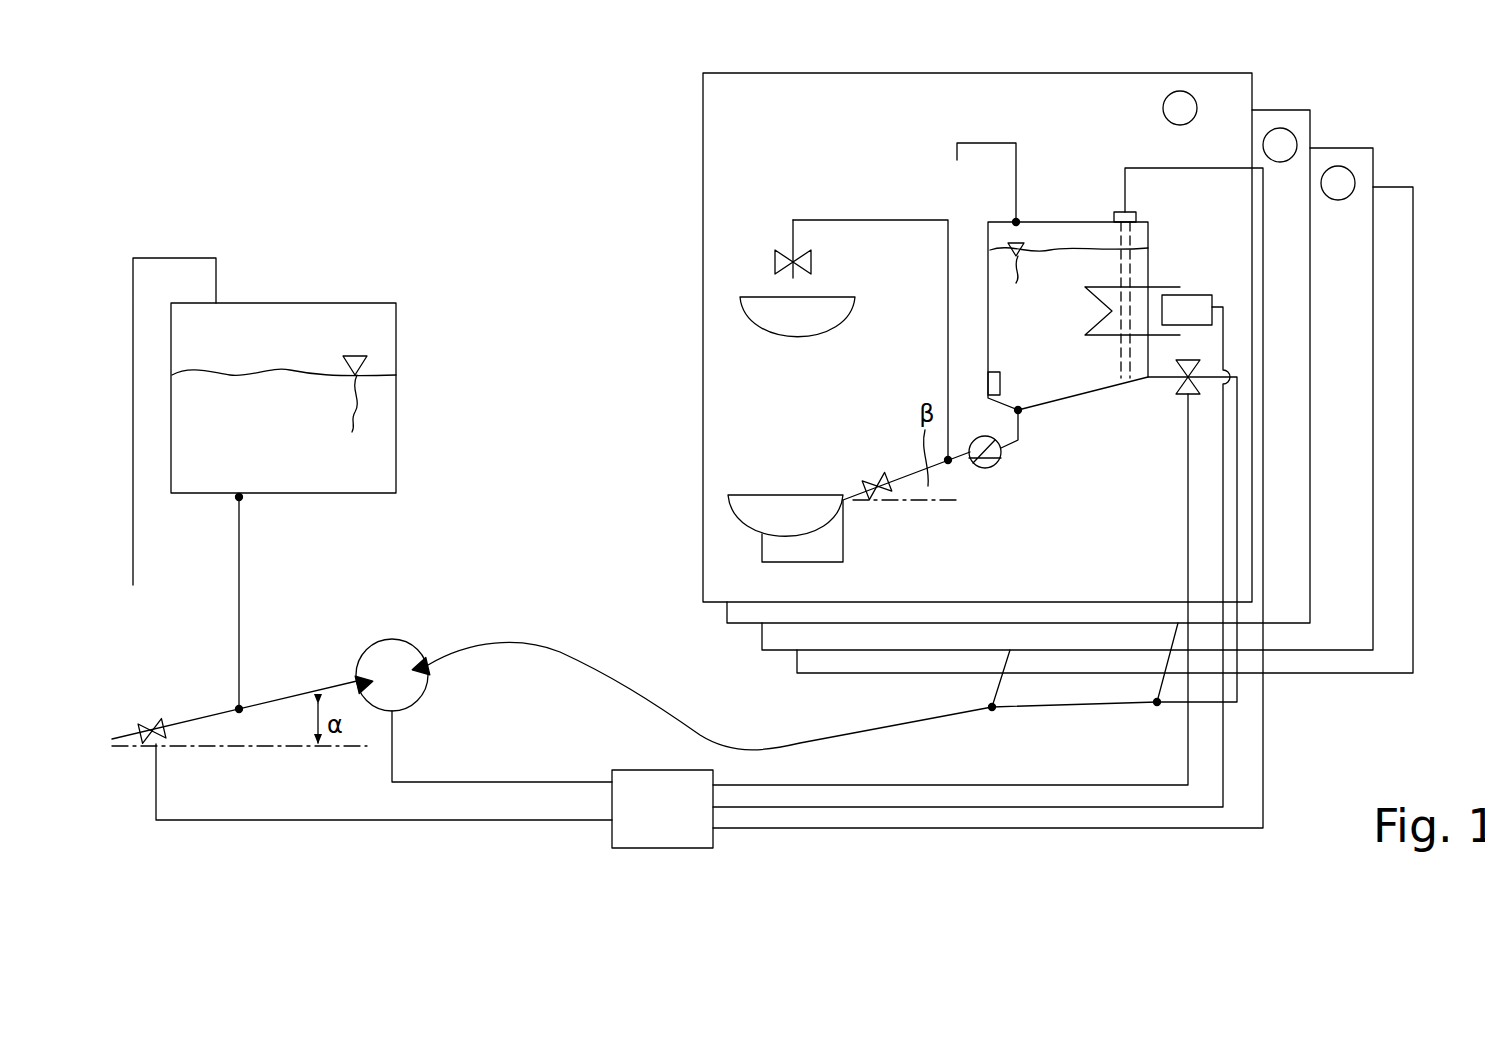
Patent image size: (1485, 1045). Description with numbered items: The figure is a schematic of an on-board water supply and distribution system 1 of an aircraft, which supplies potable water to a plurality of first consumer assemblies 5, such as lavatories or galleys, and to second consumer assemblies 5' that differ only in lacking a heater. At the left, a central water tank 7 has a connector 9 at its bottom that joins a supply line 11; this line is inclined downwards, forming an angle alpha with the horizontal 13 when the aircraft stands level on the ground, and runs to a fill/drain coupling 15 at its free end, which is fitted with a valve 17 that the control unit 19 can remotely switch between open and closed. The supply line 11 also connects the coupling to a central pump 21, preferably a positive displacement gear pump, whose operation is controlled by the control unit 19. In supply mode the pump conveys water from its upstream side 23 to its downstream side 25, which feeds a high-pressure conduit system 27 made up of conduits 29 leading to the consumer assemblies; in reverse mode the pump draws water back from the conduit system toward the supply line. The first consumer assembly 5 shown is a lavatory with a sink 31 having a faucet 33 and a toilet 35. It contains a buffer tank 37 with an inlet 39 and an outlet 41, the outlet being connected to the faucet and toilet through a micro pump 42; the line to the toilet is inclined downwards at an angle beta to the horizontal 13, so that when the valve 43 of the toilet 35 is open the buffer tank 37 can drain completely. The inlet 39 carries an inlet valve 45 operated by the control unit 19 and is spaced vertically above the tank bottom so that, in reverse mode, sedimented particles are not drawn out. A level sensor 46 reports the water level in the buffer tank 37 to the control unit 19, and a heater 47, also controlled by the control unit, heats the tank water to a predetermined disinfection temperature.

The water supply and distribution system 1 is at (540, 170).
The first consumer assembly 5 is at (1006, 311).
The second consumer assembly 5' is at (1092, 372).
The central water tank 7 is at (264, 421).
The connector 9 is at (244, 500).
The supply line 11 is at (190, 720).
The horizontal 13 is at (222, 750).
The fill/drain coupling 15 is at (143, 755).
The valve 17 is at (150, 720).
The control unit 19 is at (662, 809).
The central pump 21 is at (393, 662).
The upstream side 23 is at (360, 684).
The downstream side 25 is at (428, 666).
The high-pressure conduit system 27 is at (668, 700).
The conduits 29 is at (1160, 687).
The sink 31 is at (790, 316).
The faucet 33 is at (790, 258).
The toilet 35 is at (745, 512).
The buffer tank 37 is at (1052, 276).
The inlet 39 is at (1162, 388).
The outlet 41 is at (1022, 416).
The micro pump 42 is at (987, 470).
The valve 43 is at (876, 474).
The inlet valve 45 is at (1205, 366).
The level sensor 46 is at (1118, 212).
The heater 47 is at (1152, 302).